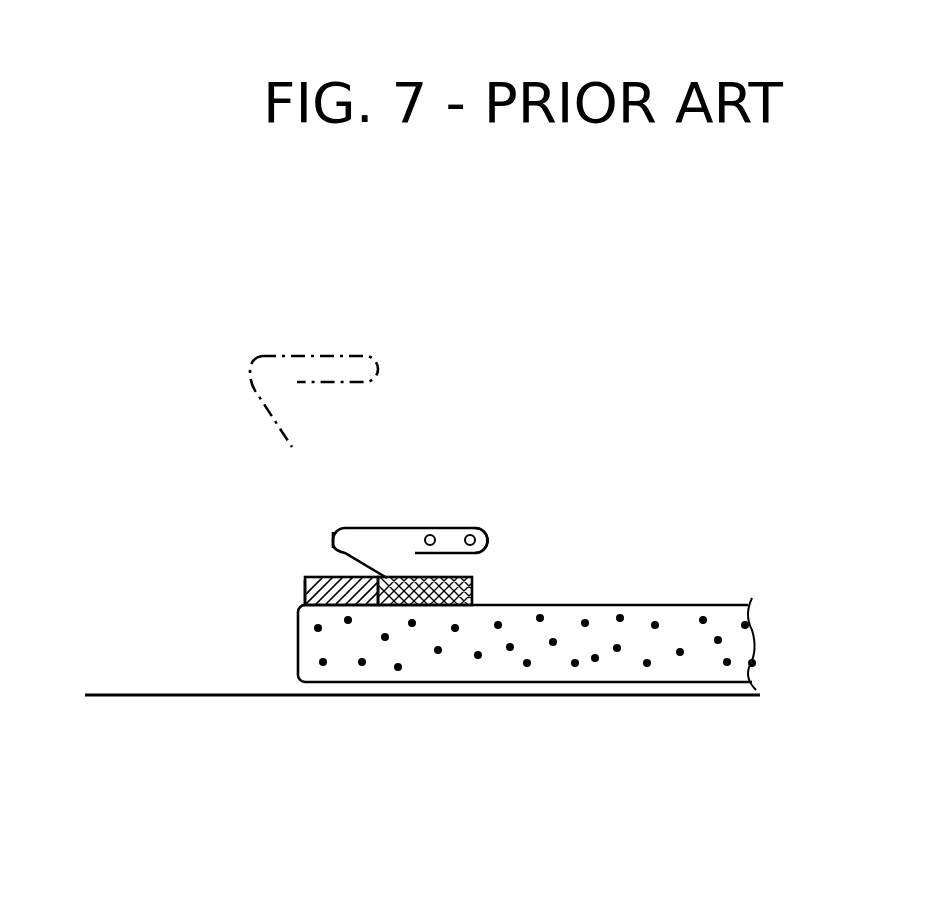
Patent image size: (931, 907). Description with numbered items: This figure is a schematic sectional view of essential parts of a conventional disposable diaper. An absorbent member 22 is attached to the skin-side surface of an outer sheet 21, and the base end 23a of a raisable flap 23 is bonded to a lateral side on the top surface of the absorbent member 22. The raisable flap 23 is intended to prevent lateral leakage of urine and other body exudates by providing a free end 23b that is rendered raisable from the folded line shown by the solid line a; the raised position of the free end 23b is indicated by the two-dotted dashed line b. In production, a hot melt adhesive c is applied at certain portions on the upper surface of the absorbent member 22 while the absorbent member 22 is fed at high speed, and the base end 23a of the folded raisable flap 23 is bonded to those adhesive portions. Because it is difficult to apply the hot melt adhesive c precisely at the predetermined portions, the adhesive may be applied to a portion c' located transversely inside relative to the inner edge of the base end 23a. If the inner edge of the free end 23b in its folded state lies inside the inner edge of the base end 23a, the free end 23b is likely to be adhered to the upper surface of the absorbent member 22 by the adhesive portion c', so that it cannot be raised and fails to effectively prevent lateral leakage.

The outer sheet 21 is at (344, 698).
The absorbent member 22 is at (649, 663).
The raisable flap 23 is at (333, 538).
The base end 23a is at (347, 577).
The free end 23b is at (493, 540).
The folded line a is at (430, 528).
The raised position of free end b is at (312, 356).
The hot melt adhesive c is at (249, 632).
The adhesive portion c' is at (499, 577).